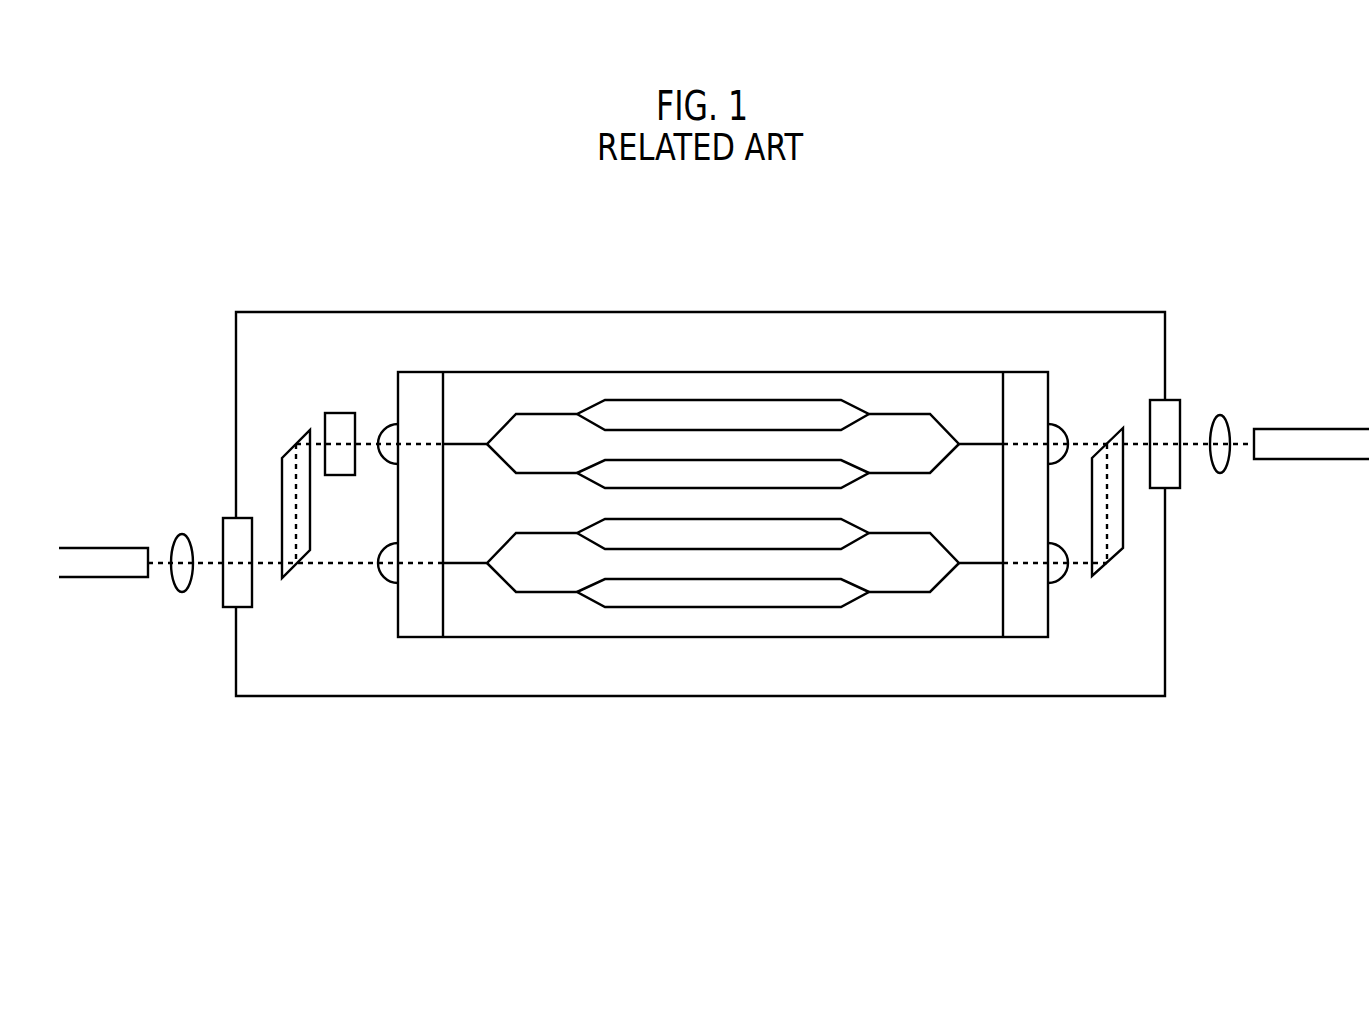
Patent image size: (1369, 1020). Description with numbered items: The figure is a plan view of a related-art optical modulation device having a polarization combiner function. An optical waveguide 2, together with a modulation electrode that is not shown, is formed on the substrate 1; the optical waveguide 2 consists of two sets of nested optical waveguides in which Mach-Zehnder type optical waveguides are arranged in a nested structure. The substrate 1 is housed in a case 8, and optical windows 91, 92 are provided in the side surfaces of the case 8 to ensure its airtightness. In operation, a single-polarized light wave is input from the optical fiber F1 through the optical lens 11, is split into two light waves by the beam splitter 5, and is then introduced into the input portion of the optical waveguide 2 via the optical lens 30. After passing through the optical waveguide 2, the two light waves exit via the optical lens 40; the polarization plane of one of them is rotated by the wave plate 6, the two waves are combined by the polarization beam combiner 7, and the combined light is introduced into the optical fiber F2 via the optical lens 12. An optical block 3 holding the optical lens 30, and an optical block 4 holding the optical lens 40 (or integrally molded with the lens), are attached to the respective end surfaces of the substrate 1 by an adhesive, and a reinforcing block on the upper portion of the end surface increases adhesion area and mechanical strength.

The substrate 1 is at (775, 637).
The optical waveguide 2 is at (875, 603).
The optical block 3 is at (1027, 372).
The optical block 4 is at (420, 372).
The beam splitter 5 is at (1123, 428).
The wave plate 6 is at (338, 413).
The polarization beam combiner 7 is at (282, 458).
The case 8 is at (1166, 638).
The optical lens 11 is at (1227, 415).
The optical lens 12 is at (185, 592).
The optical lens 30 is at (1061, 424).
The optical lens 40 is at (385, 424).
The optical window 91 is at (1170, 488).
The optical window 92 is at (233, 518).
The optical fiber F1 is at (1305, 429).
The optical fiber F2 is at (98, 578).